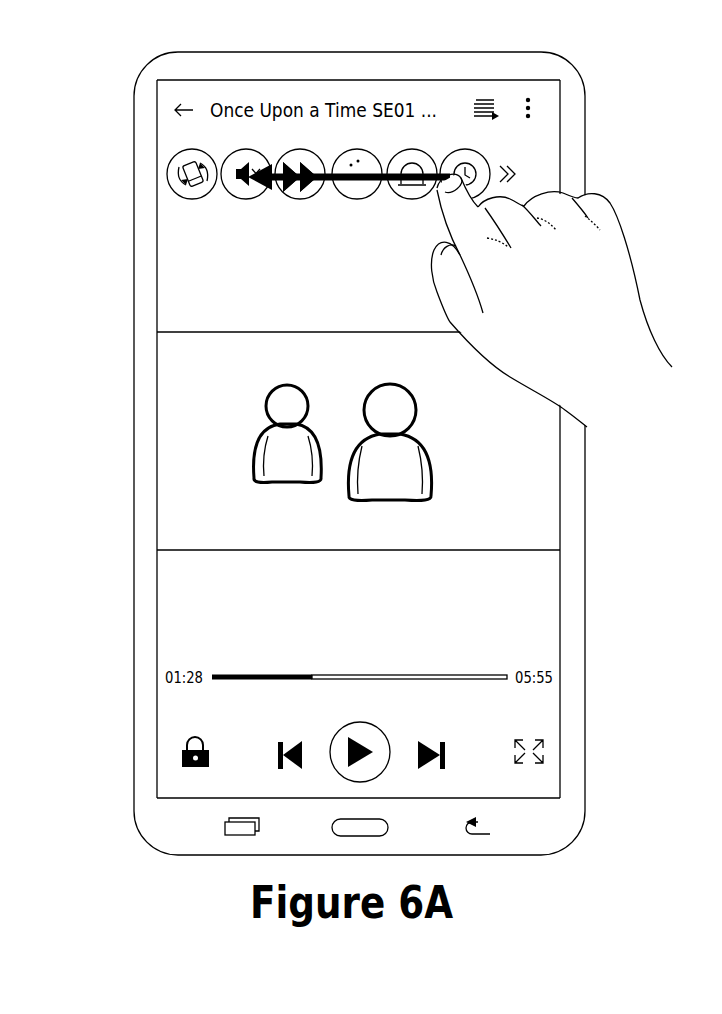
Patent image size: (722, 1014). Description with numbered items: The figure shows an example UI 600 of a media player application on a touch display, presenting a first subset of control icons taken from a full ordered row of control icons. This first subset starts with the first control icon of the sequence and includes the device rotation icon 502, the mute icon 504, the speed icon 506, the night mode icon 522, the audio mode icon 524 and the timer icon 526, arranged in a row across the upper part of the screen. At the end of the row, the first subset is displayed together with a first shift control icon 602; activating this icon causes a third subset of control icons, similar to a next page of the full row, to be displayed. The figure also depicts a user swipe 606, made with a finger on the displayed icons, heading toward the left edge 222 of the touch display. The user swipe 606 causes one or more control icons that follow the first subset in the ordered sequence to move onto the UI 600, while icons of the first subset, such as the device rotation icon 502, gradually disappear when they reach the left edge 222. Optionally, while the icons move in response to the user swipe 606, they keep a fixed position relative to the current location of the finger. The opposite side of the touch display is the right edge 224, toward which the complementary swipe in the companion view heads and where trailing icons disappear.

The UI 600 is at (620, 72).
The first shift control icon 602 is at (513, 175).
The user swipe 606 is at (331, 178).
The device rotation icon 502 is at (198, 160).
The mute icon 504 is at (240, 193).
The speed icon 506 is at (315, 190).
The night mode icon 522 is at (358, 198).
The audio mode icon 524 is at (410, 153).
The timer icon 526 is at (462, 158).
The left edge 222 is at (158, 628).
The right edge 224 is at (561, 624).